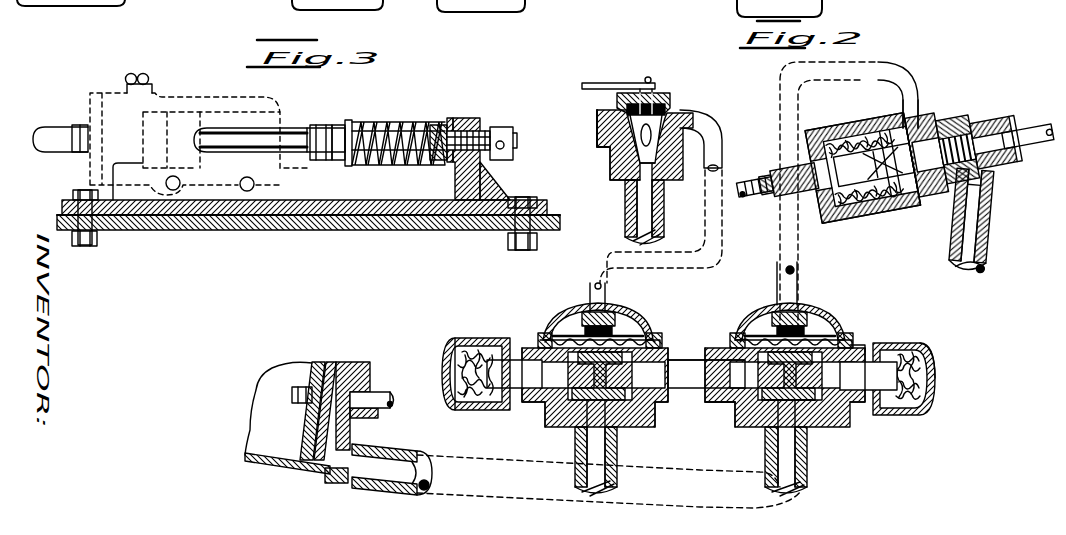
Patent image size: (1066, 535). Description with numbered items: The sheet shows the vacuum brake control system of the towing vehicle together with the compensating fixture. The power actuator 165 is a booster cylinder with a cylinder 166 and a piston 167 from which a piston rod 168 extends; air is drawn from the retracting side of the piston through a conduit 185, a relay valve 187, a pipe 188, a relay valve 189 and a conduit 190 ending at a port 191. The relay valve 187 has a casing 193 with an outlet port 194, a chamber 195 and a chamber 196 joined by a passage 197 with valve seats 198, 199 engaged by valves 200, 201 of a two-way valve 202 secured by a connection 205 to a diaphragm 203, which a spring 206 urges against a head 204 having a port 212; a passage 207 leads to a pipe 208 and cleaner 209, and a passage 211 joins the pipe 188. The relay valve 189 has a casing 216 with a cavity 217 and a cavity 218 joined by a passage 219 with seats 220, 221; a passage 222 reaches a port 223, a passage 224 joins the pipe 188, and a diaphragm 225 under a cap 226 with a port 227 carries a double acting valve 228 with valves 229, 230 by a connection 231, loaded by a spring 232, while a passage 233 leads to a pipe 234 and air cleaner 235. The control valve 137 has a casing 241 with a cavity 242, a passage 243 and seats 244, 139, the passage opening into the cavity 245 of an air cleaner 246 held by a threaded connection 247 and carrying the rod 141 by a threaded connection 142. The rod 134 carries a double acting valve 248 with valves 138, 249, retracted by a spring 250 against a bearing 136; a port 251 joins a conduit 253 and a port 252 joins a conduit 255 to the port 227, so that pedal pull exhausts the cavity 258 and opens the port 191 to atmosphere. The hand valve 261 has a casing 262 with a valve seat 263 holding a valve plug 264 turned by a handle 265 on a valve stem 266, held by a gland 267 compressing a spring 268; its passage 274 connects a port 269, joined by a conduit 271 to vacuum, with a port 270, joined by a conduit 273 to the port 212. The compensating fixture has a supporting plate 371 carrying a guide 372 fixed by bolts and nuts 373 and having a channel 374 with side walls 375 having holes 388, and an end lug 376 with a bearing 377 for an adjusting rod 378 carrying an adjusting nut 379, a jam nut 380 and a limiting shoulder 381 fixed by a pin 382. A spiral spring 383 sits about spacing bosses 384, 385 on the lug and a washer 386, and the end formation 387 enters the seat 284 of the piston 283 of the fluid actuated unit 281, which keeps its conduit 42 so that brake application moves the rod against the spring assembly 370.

In FIG. 3, the conduit 42 is at (52, 133).
In FIG. 3, the fluid actuated unit 281 is at (170, 87).
In FIG. 3, the piston 283 is at (190, 116).
In FIG. 3, the seat 284 is at (211, 140).
In FIG. 3, the side walls 375 is at (128, 178).
In FIG. 3, the end formation 387 is at (206, 136).
In FIG. 3, the adjusting rod 378 is at (292, 153).
In FIG. 3, the jam nut 380 is at (318, 127).
In FIG. 3, the adjusting nut 379 is at (338, 126).
In FIG. 3, the washer 386 is at (350, 126).
In FIG. 3, the spring assembly 370 is at (385, 89).
In FIG. 3, the spacing boss 384 is at (450, 120).
In FIG. 3, the spiral spring 383 is at (432, 128).
In FIG. 3, the bearing 377 is at (470, 128).
In FIG. 3, the limiting shoulder 381 is at (508, 126).
In FIG. 3, the pin 382 is at (500, 151).
In FIG. 3, the spacing boss 385 is at (352, 166).
In FIG. 3, the end lug 376 is at (466, 196).
In FIG. 3, the supporting plate 371 is at (390, 232).
In FIG. 3, the channel 374 is at (356, 218).
In FIG. 3, the guide 372 is at (292, 220).
In FIG. 3, the holes 388 is at (247, 192).
In FIG. 3, the bolts and nuts 373 is at (86, 246).
In FIG. 2, the handle 265 is at (597, 82).
In FIG. 2, the valve stem 266 is at (648, 90).
In FIG. 2, the gland 267 is at (655, 96).
In FIG. 2, the spring 268 is at (660, 106).
In FIG. 2, the valve plug 264 is at (652, 125).
In FIG. 2, the port 270 is at (690, 130).
In FIG. 2, the conduit 273 is at (722, 140).
In FIG. 2, the hand valve 261 is at (736, 80).
In FIG. 2, the valve seat 263 is at (597, 133).
In FIG. 2, the passage 274 is at (610, 166).
In FIG. 2, the port 269 is at (628, 185).
In FIG. 2, the casing 262 is at (662, 205).
In FIG. 2, the conduit 271 is at (660, 232).
In FIG. 2, the port 212 is at (593, 292).
In FIG. 2, the spring 206 is at (615, 310).
In FIG. 2, the connection 205 is at (625, 316).
In FIG. 2, the diaphragm 203 is at (585, 318).
In FIG. 2, the relay valve 187 is at (533, 324).
In FIG. 2, the valve 201 is at (560, 334).
In FIG. 2, the head 204 is at (635, 334).
In FIG. 2, the chamber 196 is at (663, 336).
In FIG. 2, the valve seat 199 is at (670, 338).
In FIG. 2, the pipe 188 is at (674, 372).
In FIG. 2, the cleaner 209 is at (460, 338).
In FIG. 2, the passage 207 is at (505, 348).
In FIG. 2, the two-way valve 202 is at (542, 376).
In FIG. 2, the passage 219 is at (695, 380).
In FIG. 2, the passage 211 is at (635, 385).
In FIG. 2, the pipe 208 is at (472, 407).
In FIG. 2, the passage 197 is at (528, 405).
In FIG. 2, the valve 200 is at (545, 418).
In FIG. 2, the valve seat 198 is at (645, 410).
In FIG. 2, the casing 193 is at (635, 428).
In FIG. 2, the outlet port 194 is at (582, 440).
In FIG. 2, the chamber 195 is at (622, 438).
In FIG. 2, the conduit 185 is at (576, 484).
In FIG. 2, the passage 224 is at (722, 415).
In FIG. 2, the conduit 190 is at (800, 485).
In FIG. 2, the port 191 is at (330, 484).
In FIG. 2, the power actuator 165 is at (265, 380).
In FIG. 2, the cylinder 166 is at (268, 468).
In FIG. 2, the piston 167 is at (325, 362).
In FIG. 2, the piston rod 168 is at (378, 396).
In FIG. 2, the conduit 255 is at (896, 72).
In FIG. 2, the cap 226 is at (770, 308).
In FIG. 2, the port 227 is at (800, 310).
In FIG. 2, the spring 232 is at (802, 318).
In FIG. 2, the connection 231 is at (812, 330).
In FIG. 2, the double acting valve 228 is at (818, 335).
In FIG. 2, the cavity 258 is at (830, 338).
In FIG. 2, the diaphragm 225 is at (745, 335).
In FIG. 2, the valve 230 is at (858, 342).
In FIG. 2, the cavity 218 is at (729, 339).
In FIG. 2, the passage 233 is at (860, 362).
In FIG. 2, the relay valve 189 is at (927, 334).
In FIG. 2, the pipe 234 is at (930, 358).
In FIG. 2, the air cleaner 235 is at (940, 390).
In FIG. 2, the valve seat 221 is at (892, 372).
In FIG. 2, the passage 222 is at (843, 420).
In FIG. 2, the casing 216 is at (830, 425).
In FIG. 2, the cavity 217 is at (826, 440).
In FIG. 2, the valve 229 is at (812, 438).
In FIG. 2, the valve seat 220 is at (750, 425).
In FIG. 2, the port 223 is at (768, 462).
In FIG. 2, the port 252 is at (916, 98).
In FIG. 2, the control valve 137 is at (968, 84).
In FIG. 2, the double acting valve 248 is at (933, 118).
In FIG. 2, the valve 249 is at (958, 122).
In FIG. 2, the spring 250 is at (1000, 112).
In FIG. 2, the bearing 136 is at (1003, 128).
In FIG. 2, the rod 134 is at (1045, 140).
In FIG. 2, the casing 241 is at (897, 112).
In FIG. 2, the cavity 245 is at (855, 124).
In FIG. 2, the valve 138 is at (906, 158).
In FIG. 2, the valve seat 139 is at (906, 176).
In FIG. 2, the cavity 242 is at (992, 180).
In FIG. 2, the port 251 is at (984, 190).
In FIG. 2, the conduit 253 is at (992, 248).
In FIG. 2, the air cleaner 246 is at (857, 216).
In FIG. 2, the threaded connection 247 is at (893, 222).
In FIG. 2, the passage 243 is at (935, 212).
In FIG. 2, the valve seat 244 is at (948, 222).
In FIG. 2, the threaded connection 142 is at (785, 170).
In FIG. 2, the rod 141 is at (748, 180).